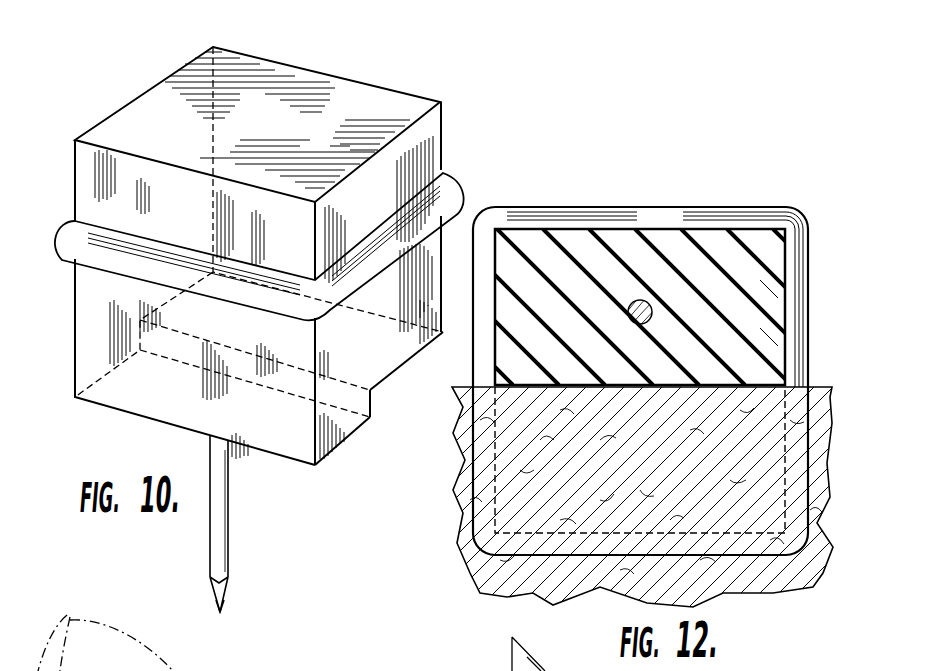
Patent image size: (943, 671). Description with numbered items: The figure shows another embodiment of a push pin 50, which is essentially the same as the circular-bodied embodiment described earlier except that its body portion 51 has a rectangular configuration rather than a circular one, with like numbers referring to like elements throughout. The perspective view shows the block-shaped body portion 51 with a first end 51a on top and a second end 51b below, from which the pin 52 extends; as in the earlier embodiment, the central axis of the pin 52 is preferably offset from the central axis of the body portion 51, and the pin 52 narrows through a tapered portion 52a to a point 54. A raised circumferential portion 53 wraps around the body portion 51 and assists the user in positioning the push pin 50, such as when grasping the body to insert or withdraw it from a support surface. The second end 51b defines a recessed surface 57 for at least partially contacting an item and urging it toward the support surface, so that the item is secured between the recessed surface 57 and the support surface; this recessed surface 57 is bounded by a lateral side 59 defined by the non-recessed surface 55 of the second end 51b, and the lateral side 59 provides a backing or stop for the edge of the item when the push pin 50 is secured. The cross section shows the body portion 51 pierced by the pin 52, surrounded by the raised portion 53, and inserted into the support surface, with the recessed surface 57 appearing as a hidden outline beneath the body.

In FIG. 10, the push pin 50 is at (341, 41).
In FIG. 12, the push pin 50 is at (672, 186).
In FIG. 10, the body portion 51 is at (88, 192).
In FIG. 12, the body portion 51 is at (522, 243).
In FIG. 10, the first end of body portion 51a is at (375, 93).
In FIG. 10, the second end of body portion 51b is at (355, 416).
In FIG. 12, the second end of body portion 51b is at (768, 285).
In FIG. 10, the pin 52 is at (222, 488).
In FIG. 12, the pin 52 is at (649, 303).
In FIG. 10, the tapered portion of pin 52a is at (227, 567).
In FIG. 10, the raised circumferential portion 53 is at (453, 187).
In FIG. 12, the raised circumferential portion 53 is at (577, 220).
In FIG. 10, the pin point 54 is at (220, 612).
In FIG. 10, the non-recessed surface of second end 55 is at (339, 455).
In FIG. 12, the non-recessed surface of second end 55 is at (768, 333).
In FIG. 10, the recessed surface 57 is at (415, 365).
In FIG. 12, the recessed surface 57 is at (740, 516).
In FIG. 10, the lateral side 59 is at (382, 402).